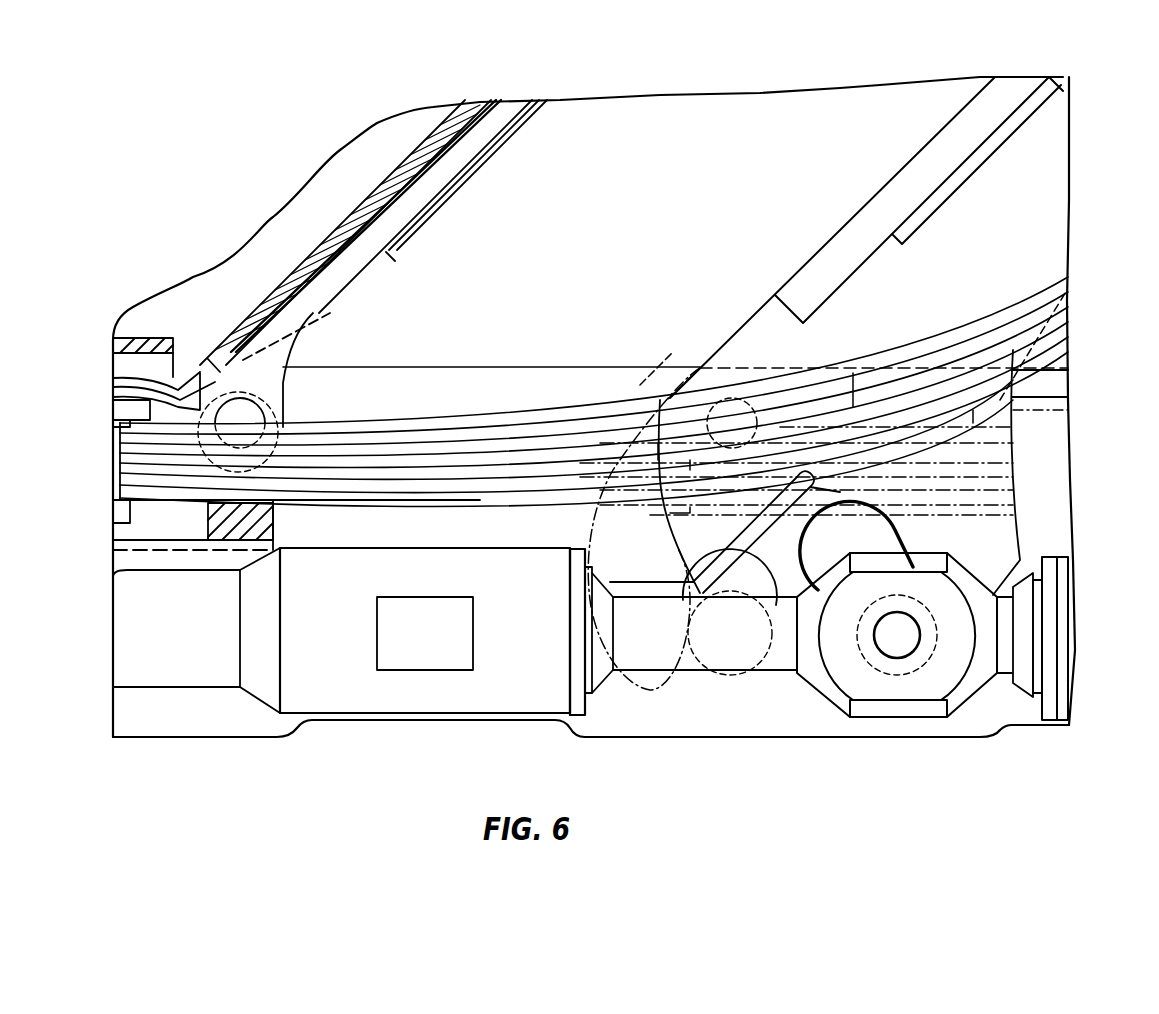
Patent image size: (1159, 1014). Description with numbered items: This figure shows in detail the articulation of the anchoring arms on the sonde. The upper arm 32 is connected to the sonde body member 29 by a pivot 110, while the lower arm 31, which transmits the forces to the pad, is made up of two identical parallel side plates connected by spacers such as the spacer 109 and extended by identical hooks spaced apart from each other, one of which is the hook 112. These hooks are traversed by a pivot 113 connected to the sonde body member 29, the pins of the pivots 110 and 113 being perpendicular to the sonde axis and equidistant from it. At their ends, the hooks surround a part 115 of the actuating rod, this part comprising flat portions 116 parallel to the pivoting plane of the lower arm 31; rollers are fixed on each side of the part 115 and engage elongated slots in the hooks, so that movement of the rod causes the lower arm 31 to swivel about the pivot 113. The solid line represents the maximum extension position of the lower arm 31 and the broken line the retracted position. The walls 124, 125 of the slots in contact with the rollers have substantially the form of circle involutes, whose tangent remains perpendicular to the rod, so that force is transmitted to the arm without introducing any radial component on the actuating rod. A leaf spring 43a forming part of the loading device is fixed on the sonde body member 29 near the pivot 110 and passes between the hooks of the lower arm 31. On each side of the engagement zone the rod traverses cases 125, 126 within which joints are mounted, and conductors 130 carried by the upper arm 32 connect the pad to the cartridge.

The sonde body member 29 is at (468, 390).
The lower arm 31 is at (743, 327).
The upper arm 32 is at (290, 275).
The leaf spring 43a is at (552, 424).
The spacer 109 is at (905, 232).
The pivot 110 is at (243, 417).
The hook 112 is at (1003, 547).
The pivot 113 is at (717, 417).
The part of the actuating rod 115 is at (912, 712).
The flat portion 116 is at (940, 677).
The slot wall 124 is at (1050, 591).
The slot wall / case 125 is at (1068, 713).
The case 126 is at (570, 700).
The conductors 130 is at (143, 378).